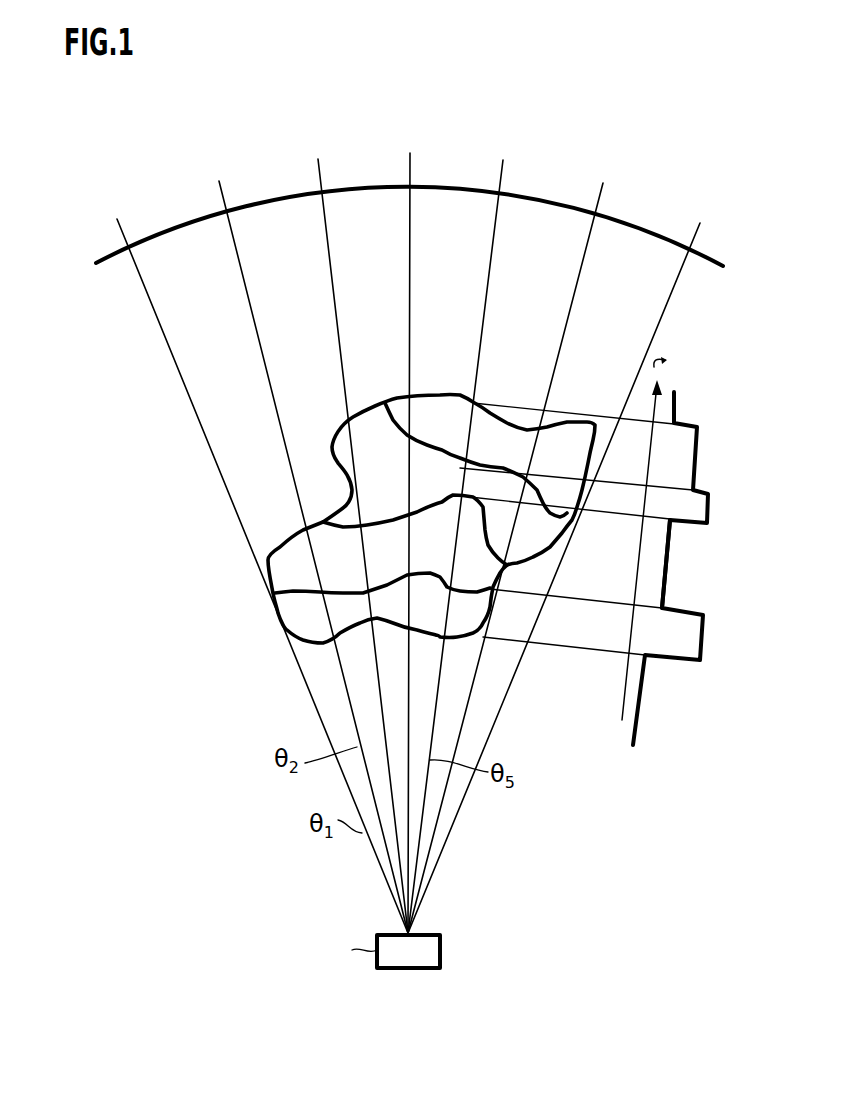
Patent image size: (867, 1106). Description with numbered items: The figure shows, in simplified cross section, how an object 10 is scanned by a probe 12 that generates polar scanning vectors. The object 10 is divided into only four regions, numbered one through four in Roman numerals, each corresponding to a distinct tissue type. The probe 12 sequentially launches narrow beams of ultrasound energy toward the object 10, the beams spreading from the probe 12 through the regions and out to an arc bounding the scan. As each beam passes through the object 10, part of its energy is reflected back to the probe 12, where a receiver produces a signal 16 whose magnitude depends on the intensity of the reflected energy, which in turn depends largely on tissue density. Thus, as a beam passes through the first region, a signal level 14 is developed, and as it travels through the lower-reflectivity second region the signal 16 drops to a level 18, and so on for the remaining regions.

The object 10 is at (503, 447).
The scanning probe 12 is at (440, 950).
The signal level 14 is at (708, 638).
The signal 16 is at (657, 682).
The signal level 18 is at (666, 580).